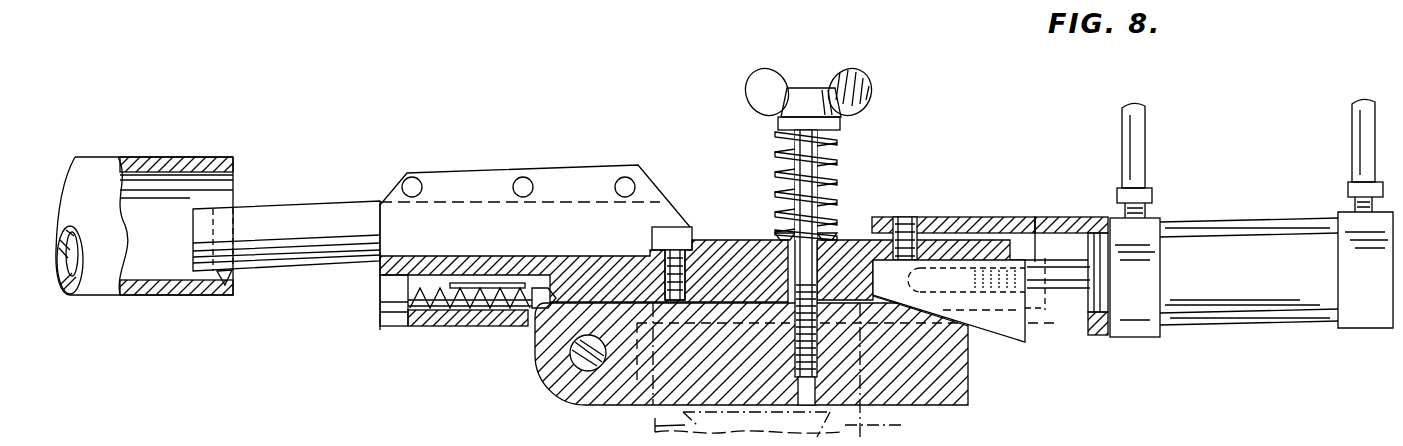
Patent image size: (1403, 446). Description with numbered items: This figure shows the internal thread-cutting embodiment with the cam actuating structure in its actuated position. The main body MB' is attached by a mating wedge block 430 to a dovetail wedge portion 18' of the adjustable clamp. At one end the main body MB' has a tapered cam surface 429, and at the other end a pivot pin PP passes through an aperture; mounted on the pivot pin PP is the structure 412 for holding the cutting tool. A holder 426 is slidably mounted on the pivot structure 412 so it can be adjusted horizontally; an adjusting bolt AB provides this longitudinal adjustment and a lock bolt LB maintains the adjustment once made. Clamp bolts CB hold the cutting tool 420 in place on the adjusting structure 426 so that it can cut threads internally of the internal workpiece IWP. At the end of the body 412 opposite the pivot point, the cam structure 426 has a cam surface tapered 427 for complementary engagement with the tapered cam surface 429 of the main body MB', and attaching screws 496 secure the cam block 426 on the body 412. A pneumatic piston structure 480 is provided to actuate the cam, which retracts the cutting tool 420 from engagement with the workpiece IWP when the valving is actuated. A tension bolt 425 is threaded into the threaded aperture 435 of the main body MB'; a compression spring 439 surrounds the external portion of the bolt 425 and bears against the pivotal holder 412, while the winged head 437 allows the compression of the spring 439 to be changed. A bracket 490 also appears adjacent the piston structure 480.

The internal workpiece IWP is at (180, 158).
The cutting tool 420 is at (320, 233).
The clamp bolts CB is at (625, 177).
The lock bolt LB is at (688, 227).
The pivot structure 412 is at (714, 252).
The adjusting bolt AB is at (392, 300).
The holder 426 is at (410, 323).
The threaded aperture 435 is at (796, 362).
The tension bolt 425 is at (830, 233).
The compression spring 439 is at (838, 162).
The winged head 437 is at (860, 85).
The attaching screws 496 is at (935, 217).
The bracket 490 is at (1053, 217).
The tapered cam surface 427 is at (1008, 332).
The tapered cam surface 429 is at (968, 326).
The pneumatic piston structure 480 is at (1270, 267).
The pivot pin PP is at (556, 385).
The mating wedge block 430 is at (905, 416).
The main body MB' is at (778, 436).
The dovetail wedge portion 18' is at (646, 429).